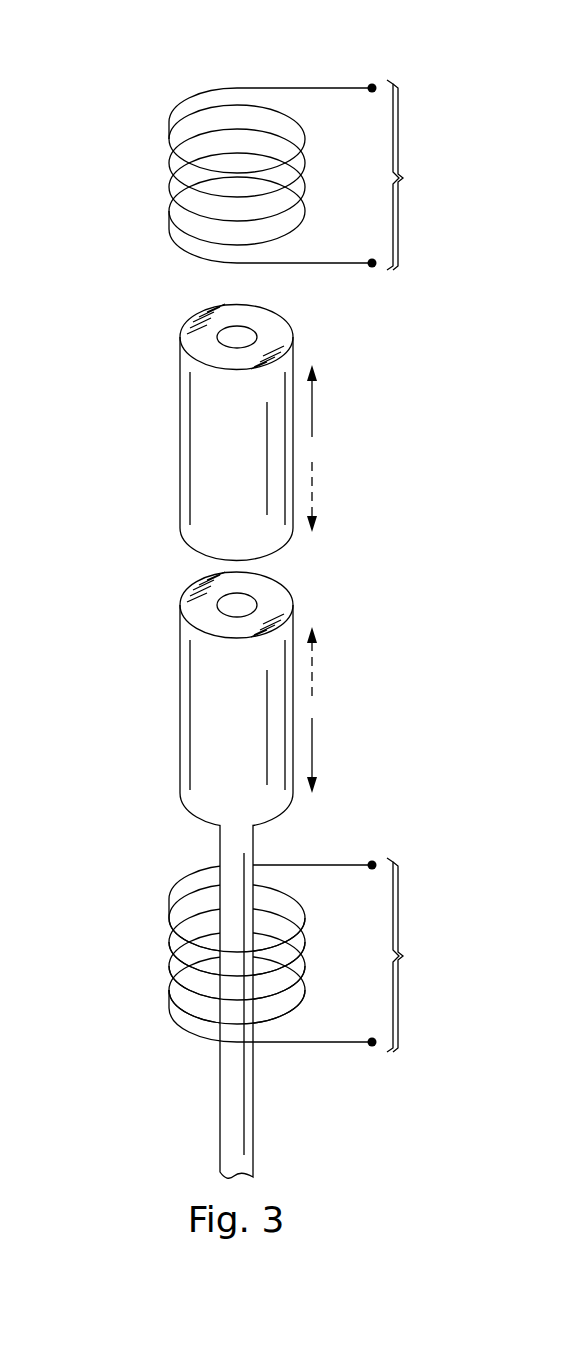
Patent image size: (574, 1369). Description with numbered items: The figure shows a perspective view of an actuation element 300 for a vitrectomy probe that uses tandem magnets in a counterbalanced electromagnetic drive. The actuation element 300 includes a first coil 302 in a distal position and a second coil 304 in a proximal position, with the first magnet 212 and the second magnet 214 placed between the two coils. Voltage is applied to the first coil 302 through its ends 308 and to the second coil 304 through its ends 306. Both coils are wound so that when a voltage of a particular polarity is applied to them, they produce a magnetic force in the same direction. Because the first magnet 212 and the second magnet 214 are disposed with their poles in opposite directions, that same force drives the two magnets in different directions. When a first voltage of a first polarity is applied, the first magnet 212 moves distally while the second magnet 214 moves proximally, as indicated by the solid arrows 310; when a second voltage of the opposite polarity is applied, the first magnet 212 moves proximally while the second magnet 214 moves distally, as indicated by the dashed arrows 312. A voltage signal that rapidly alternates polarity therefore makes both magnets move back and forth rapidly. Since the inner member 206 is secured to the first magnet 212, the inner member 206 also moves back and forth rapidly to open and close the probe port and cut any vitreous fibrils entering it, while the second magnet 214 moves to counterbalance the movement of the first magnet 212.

The actuation element 300 is at (98, 82).
The second coil 304 is at (170, 175).
The ends 306 is at (417, 175).
The second magnet 214 is at (180, 432).
The solid arrows 310 is at (312, 405).
The dashed arrows 312 is at (312, 490).
The first magnet 212 is at (180, 700).
The first coil 302 is at (168, 955).
The ends 308 is at (418, 955).
The inner member 206 is at (220, 1105).